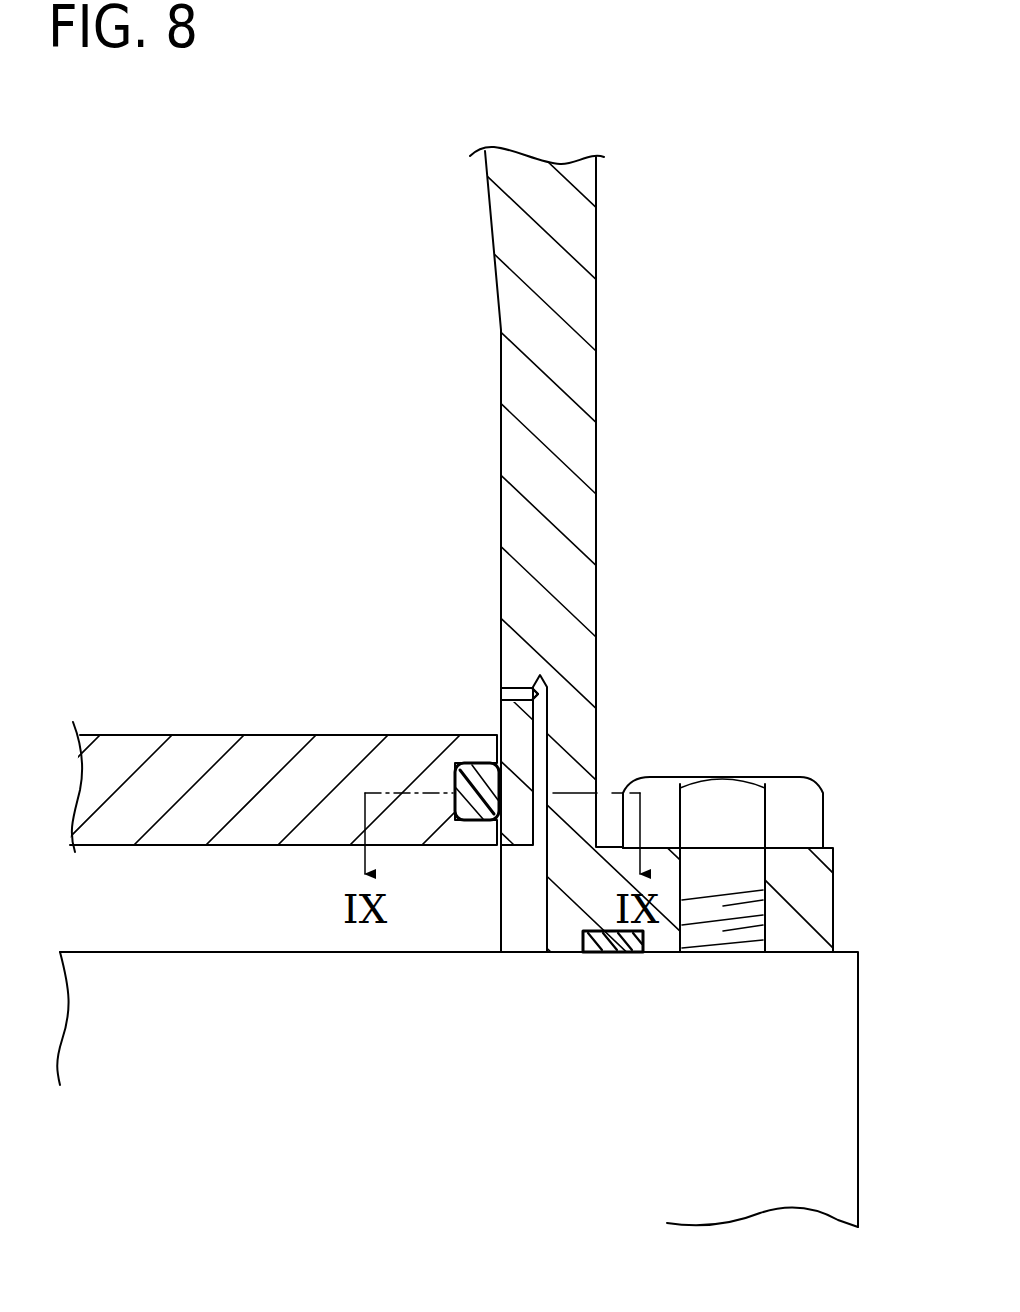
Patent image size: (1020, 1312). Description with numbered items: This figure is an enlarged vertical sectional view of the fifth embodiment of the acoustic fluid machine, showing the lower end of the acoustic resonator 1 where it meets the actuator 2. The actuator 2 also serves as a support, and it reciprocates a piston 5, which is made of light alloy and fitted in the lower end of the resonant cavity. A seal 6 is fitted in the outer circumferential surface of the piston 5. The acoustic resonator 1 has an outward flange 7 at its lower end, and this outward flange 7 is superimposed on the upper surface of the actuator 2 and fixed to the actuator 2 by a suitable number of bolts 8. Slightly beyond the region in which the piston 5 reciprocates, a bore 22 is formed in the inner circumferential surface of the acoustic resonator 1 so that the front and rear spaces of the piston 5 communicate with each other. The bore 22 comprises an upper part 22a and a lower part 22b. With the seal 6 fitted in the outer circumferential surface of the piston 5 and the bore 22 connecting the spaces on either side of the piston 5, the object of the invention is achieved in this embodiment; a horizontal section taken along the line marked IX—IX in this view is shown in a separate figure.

The acoustic resonator 1 is at (596, 458).
The actuator 2 is at (858, 1082).
The piston 5 is at (219, 735).
The seal 6 is at (455, 763).
The outward flange 7 is at (833, 897).
The bolt 8 is at (793, 777).
The bore 22 is at (531, 821).
The upper part 22a is at (502, 690).
The lower part 22b is at (525, 920).